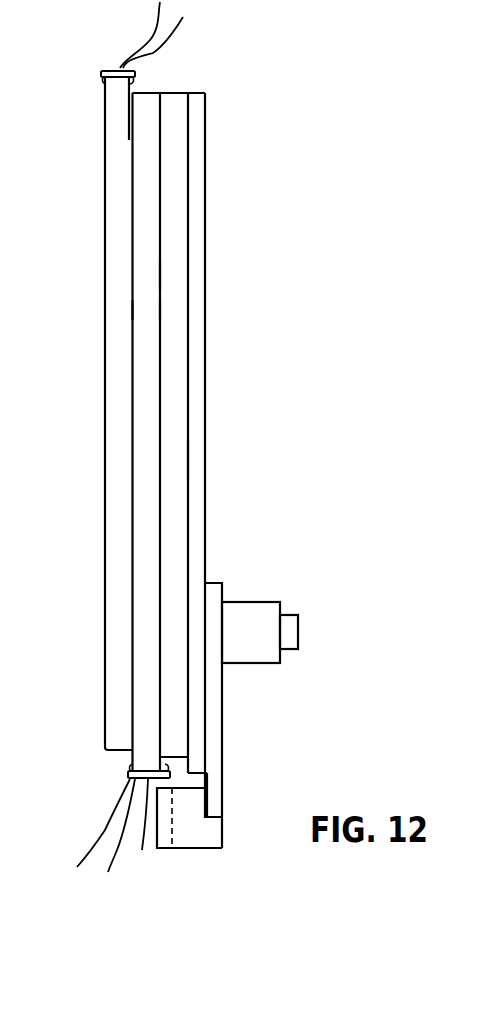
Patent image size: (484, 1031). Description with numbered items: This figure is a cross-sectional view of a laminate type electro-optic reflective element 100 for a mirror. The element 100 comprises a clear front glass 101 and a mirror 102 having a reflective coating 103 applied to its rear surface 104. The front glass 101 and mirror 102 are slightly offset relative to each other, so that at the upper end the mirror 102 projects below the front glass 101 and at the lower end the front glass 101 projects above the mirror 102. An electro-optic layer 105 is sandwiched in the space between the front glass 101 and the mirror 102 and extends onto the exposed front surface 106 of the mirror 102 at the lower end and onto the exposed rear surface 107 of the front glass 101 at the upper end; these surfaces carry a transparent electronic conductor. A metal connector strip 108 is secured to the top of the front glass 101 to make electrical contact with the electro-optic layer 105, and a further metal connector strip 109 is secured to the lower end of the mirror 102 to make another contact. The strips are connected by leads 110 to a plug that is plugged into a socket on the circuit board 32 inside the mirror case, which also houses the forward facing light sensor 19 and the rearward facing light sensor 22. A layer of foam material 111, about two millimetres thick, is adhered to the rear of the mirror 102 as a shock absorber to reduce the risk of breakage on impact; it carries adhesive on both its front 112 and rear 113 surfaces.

The electro optic reflective element 100 is at (54, 90).
The front glass 101 is at (113, 209).
The mirror 102 is at (148, 302).
The reflective coating 103 is at (163, 273).
The rear surface 104 is at (160, 235).
The electro-optic layer 105 is at (132, 276).
The front surface 106 is at (130, 759).
The rear surface 107 is at (134, 92).
The metal connector strip 108 is at (110, 68).
The metal connector strip 109 is at (142, 849).
The leads 110 is at (166, 42).
The layer of foam material 111 is at (172, 402).
The front surface 112 is at (160, 449).
The rear surface 113 is at (188, 458).
The forward facing light sensor 19 is at (287, 628).
The rearward facing light sensor 22 is at (165, 834).
The circuit board 32 is at (198, 512).